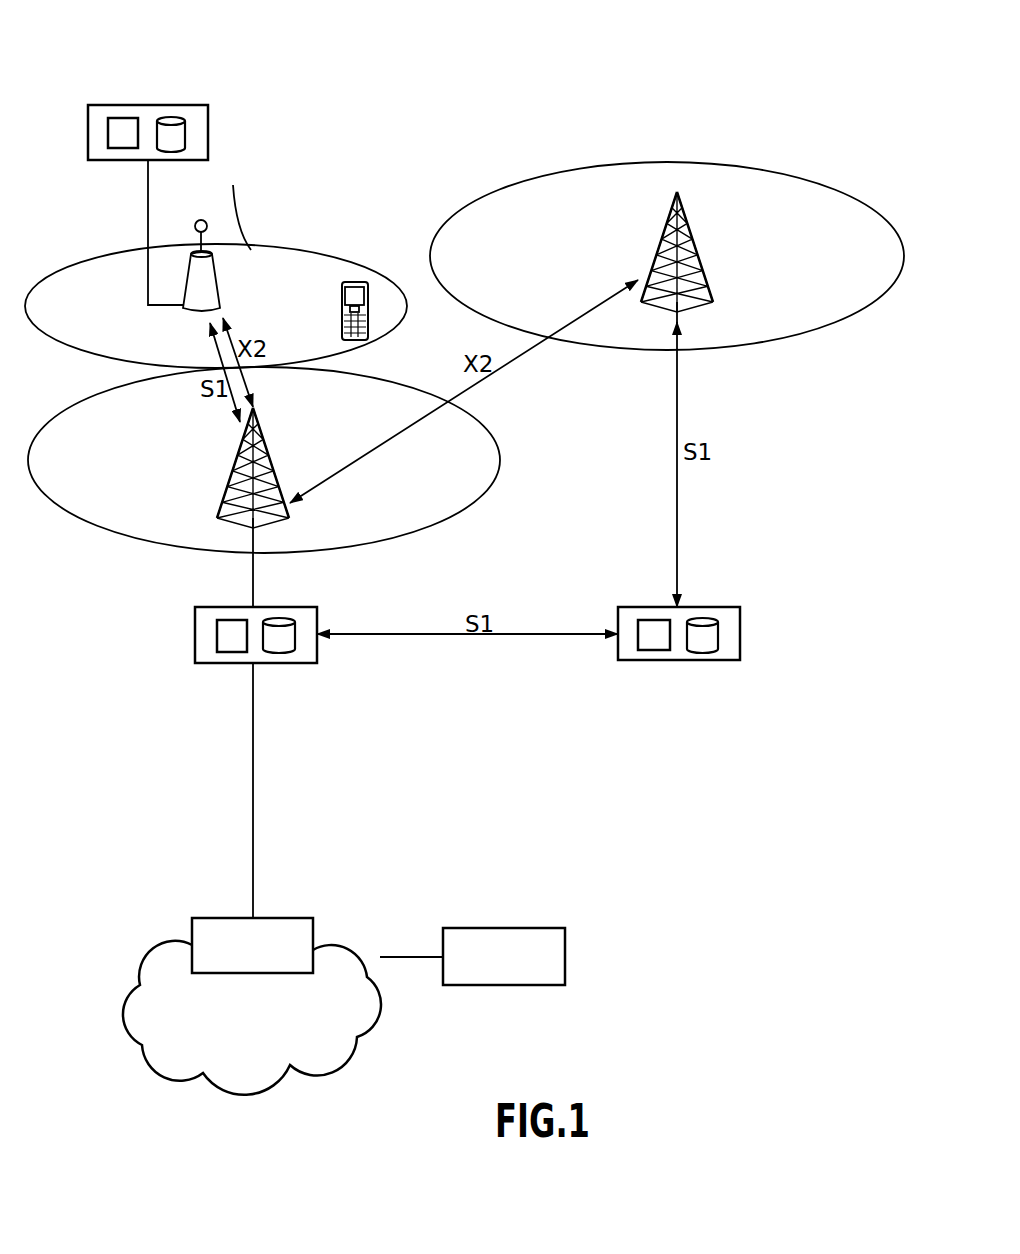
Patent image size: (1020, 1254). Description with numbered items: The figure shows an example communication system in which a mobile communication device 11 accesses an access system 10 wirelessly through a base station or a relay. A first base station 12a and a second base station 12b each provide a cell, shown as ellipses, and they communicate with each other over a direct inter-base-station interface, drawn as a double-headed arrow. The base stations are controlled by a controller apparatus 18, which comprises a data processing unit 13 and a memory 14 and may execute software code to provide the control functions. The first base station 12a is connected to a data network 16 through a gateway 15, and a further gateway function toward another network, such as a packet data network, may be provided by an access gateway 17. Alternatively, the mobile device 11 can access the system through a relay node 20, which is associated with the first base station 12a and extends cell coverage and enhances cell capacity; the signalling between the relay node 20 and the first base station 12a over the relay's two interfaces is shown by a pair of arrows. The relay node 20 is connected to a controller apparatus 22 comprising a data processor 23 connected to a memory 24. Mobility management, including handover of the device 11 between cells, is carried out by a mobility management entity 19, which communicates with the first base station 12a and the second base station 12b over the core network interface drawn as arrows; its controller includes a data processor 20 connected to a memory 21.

The access system 10 is at (803, 66).
The mobile communication device 11 is at (343, 302).
The first base station 12a is at (266, 462).
The second base station 12b is at (687, 240).
The data processing unit 13 is at (227, 654).
The memory 14 is at (284, 654).
The gateway 15 is at (292, 917).
The data network 16 is at (140, 983).
The access gateway 17 is at (485, 927).
The controller apparatus 18 is at (220, 606).
The mobility management entity 19 is at (641, 606).
The relay node 20 is at (211, 291).
The memory 21 is at (707, 654).
The controller apparatus 22 is at (109, 105).
The data processor 23 is at (118, 148).
The memory 24 is at (182, 142).